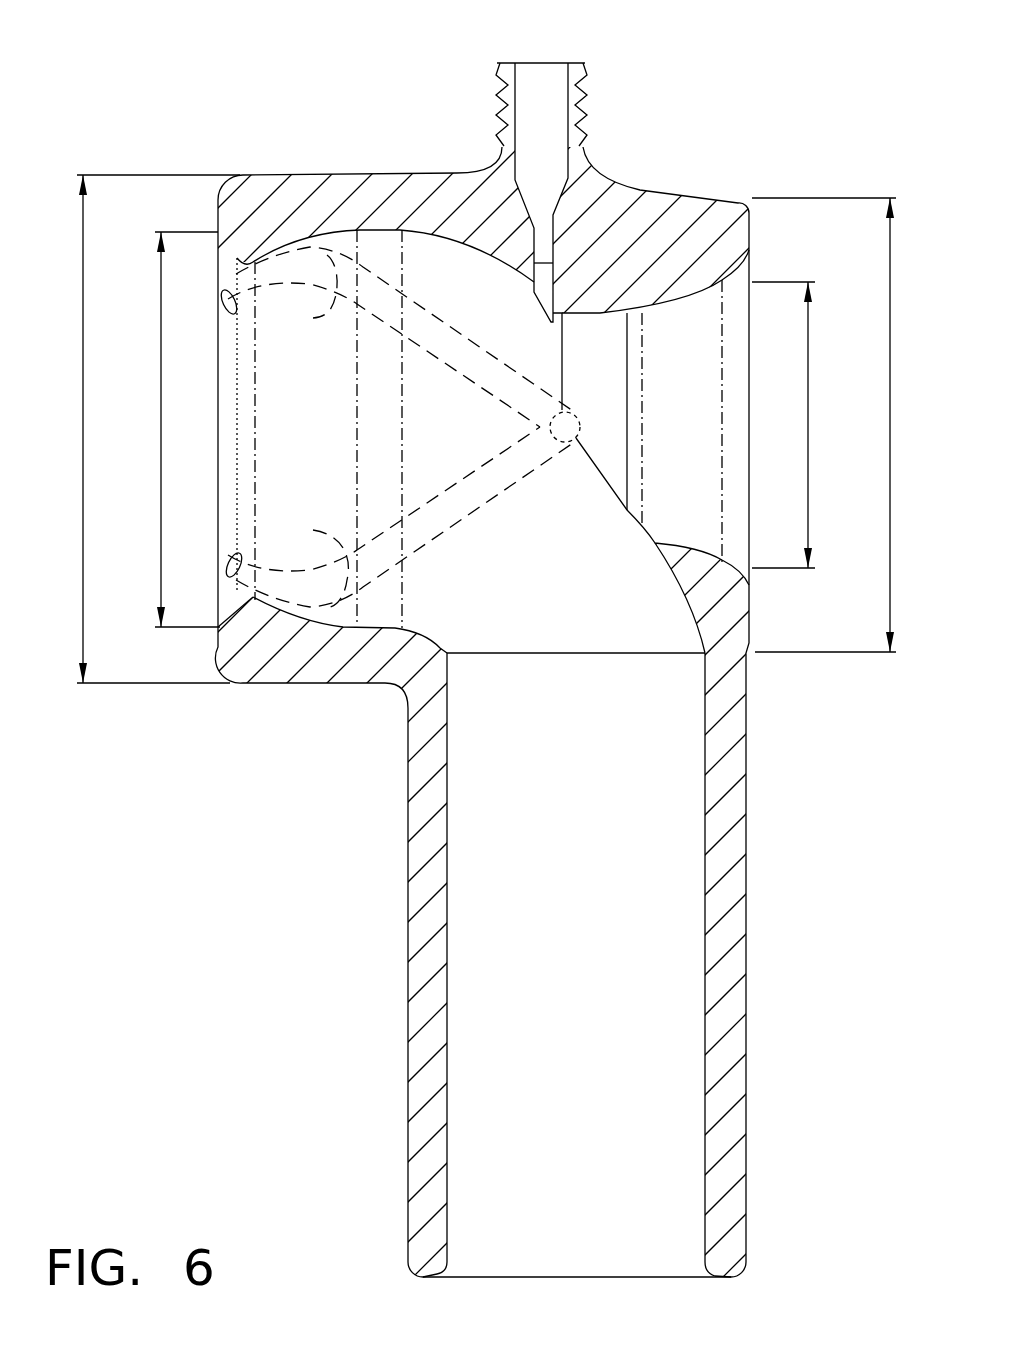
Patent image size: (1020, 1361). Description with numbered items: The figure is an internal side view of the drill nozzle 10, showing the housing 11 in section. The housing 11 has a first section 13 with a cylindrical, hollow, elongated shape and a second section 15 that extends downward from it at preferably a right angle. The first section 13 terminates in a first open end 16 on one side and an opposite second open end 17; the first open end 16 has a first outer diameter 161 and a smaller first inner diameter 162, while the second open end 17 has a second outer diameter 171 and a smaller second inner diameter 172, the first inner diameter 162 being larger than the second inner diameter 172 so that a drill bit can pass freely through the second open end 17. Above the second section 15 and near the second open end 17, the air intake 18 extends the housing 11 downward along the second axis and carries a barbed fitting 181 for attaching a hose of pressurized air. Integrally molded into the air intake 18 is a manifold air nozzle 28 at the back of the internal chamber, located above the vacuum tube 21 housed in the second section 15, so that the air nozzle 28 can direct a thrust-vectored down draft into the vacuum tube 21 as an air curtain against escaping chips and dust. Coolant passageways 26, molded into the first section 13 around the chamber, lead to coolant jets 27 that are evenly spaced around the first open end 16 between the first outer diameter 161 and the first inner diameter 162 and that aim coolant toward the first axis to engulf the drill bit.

The drill nozzle 10 is at (233, 987).
The housing 11 is at (702, 192).
The first section 13 is at (318, 193).
The second section 15 is at (407, 900).
The first open end 16 is at (225, 372).
The second open end 17 is at (749, 352).
The air intake 18 is at (505, 70).
The barbed fitting 181 is at (497, 122).
The vacuum tube 21 is at (480, 1090).
The coolant passageways 26 is at (325, 314).
The coolant jets 27 is at (226, 308).
The manifold air nozzle 28 is at (538, 83).
The first outer diameter 161 is at (83, 432).
The first inner diameter 162 is at (161, 374).
The second outer diameter 171 is at (890, 366).
The second inner diameter 172 is at (808, 442).